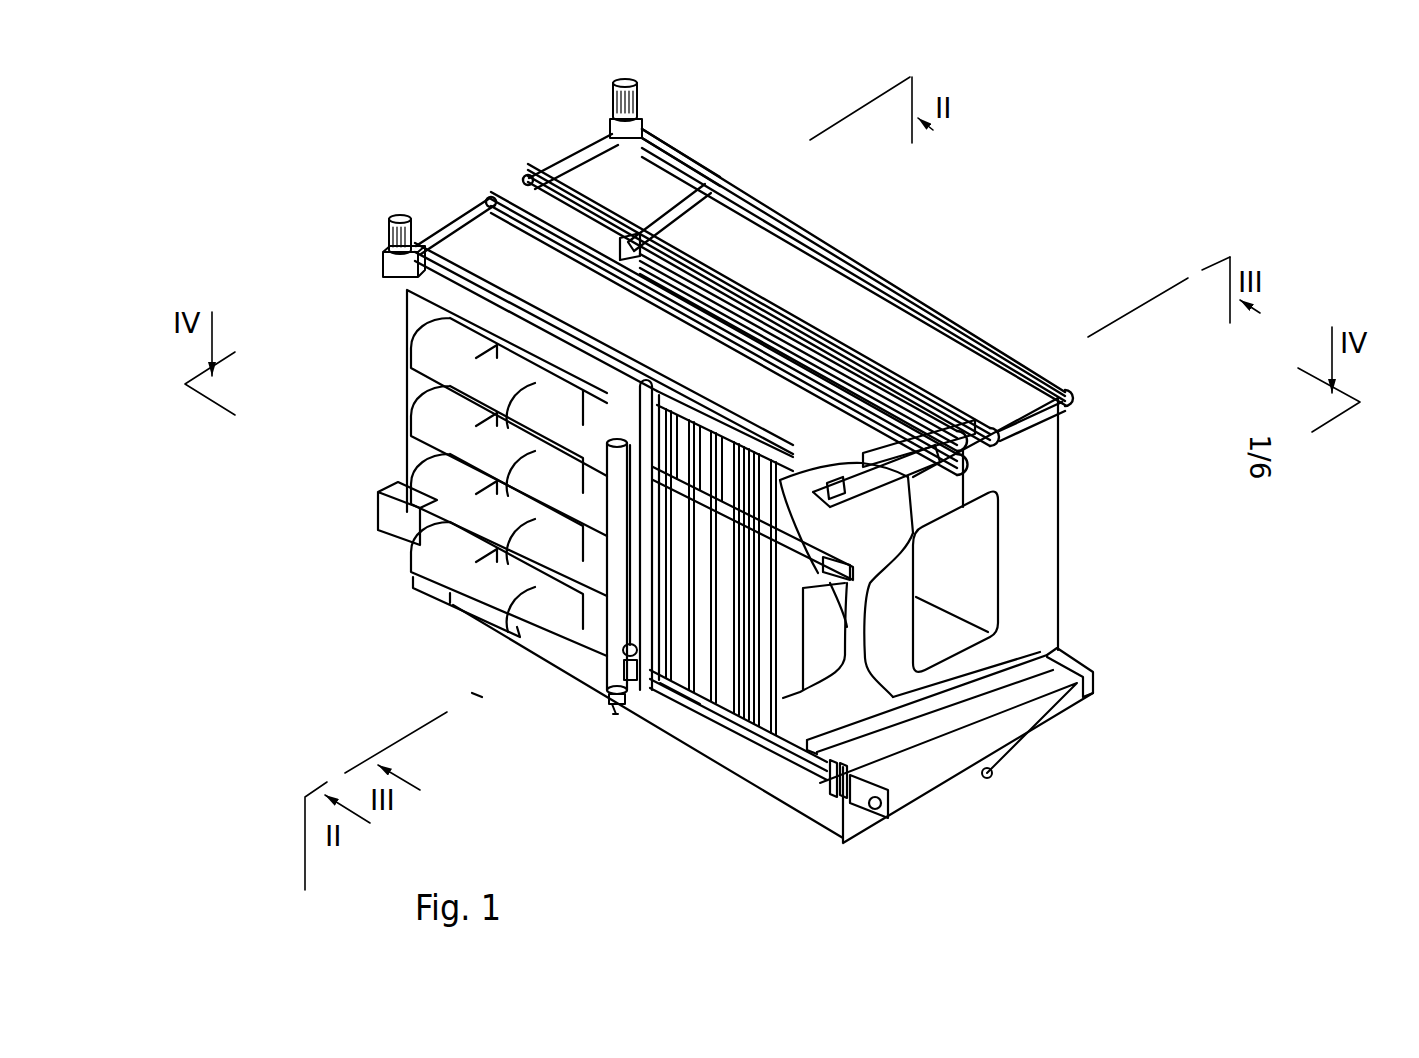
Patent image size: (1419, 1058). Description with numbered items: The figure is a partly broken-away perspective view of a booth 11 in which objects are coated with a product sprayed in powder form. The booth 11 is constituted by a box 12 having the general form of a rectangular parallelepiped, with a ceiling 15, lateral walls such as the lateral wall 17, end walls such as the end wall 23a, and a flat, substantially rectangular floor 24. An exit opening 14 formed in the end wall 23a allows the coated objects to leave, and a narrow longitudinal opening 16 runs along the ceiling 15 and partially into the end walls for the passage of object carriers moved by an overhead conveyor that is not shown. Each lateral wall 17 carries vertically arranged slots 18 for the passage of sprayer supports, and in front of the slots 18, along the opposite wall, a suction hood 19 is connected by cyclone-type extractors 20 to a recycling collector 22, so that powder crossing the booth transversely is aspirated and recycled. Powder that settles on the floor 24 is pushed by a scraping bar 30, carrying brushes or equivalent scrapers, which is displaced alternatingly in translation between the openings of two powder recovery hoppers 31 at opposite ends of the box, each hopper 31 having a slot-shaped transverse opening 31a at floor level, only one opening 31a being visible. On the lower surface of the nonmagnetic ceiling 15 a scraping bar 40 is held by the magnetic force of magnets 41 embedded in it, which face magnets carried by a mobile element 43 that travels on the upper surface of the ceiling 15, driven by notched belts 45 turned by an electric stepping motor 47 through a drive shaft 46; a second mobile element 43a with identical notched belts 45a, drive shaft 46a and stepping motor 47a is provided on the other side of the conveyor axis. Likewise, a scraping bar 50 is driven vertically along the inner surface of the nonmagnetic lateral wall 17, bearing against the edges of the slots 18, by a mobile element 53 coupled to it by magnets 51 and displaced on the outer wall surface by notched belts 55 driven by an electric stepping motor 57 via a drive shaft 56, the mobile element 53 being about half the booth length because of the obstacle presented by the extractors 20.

The booth 11 is at (814, 231).
The box 12 is at (917, 352).
The exit opening 14 is at (968, 606).
The ceiling 15 is at (720, 198).
The longitudinal opening 16 is at (975, 430).
The lateral wall 17 is at (735, 680).
The slots 18 is at (790, 720).
The suction hood 19 is at (612, 627).
The extractors 20 is at (432, 428).
The recycling collector 22 is at (629, 676).
The end wall 23a is at (1030, 468).
The floor 24 is at (755, 730).
The scraping bar 30 is at (812, 763).
The powder recovery hopper 31 is at (385, 535).
The transverse opening 31a is at (880, 757).
The scraping bar 40 is at (863, 492).
The magnets 41 is at (838, 505).
The mobile element 43 is at (865, 444).
The mobile element 43a is at (724, 220).
The notched belts 45 is at (611, 204).
The notched belts 45a is at (691, 154).
The drive shaft 46 is at (436, 218).
The drive shaft 46a is at (572, 146).
The electric stepping motor 47 is at (380, 237).
The electric stepping motor 47a is at (606, 95).
The scraping bar 50 is at (858, 582).
The magnets 51 is at (832, 585).
The mobile element 53 is at (750, 538).
The notched belts 55 is at (645, 660).
The drive shaft 56 is at (666, 710).
The electric stepping motor 57 is at (623, 675).